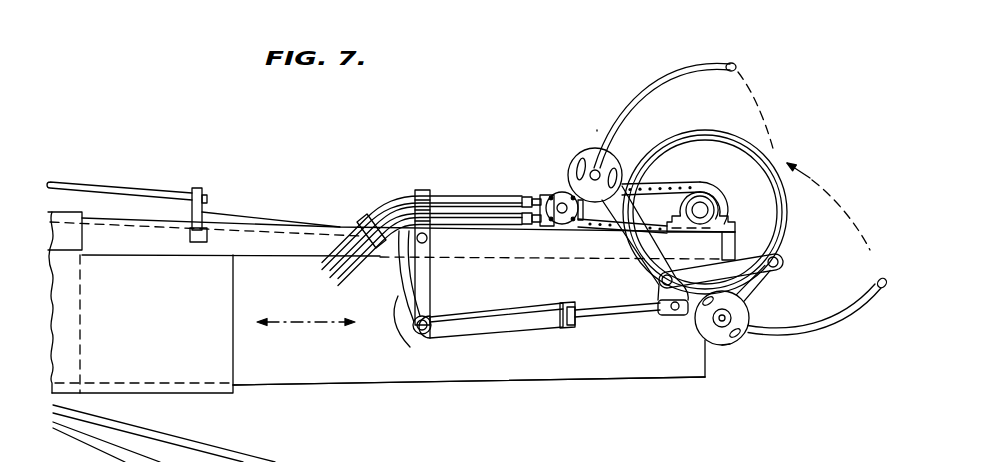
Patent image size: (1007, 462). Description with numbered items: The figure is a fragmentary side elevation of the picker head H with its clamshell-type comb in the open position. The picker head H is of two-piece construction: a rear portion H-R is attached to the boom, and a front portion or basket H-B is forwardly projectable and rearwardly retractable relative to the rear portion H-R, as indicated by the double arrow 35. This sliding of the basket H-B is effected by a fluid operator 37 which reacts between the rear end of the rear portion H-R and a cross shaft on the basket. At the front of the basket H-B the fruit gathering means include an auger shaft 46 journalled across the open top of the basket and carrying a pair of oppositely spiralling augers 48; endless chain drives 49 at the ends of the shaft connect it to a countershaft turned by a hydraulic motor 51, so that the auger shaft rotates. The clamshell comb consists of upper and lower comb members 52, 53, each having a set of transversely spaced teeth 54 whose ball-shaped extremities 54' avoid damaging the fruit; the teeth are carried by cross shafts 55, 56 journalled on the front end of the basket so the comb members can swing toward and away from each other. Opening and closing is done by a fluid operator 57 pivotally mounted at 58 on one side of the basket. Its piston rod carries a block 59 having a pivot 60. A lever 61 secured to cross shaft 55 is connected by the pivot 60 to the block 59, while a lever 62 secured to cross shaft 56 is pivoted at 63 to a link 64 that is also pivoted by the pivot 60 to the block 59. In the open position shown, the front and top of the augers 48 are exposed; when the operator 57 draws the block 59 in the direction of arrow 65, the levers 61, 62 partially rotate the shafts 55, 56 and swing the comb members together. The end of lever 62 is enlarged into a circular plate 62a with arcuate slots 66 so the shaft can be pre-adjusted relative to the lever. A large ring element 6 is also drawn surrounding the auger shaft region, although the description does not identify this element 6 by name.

The rotary ring 6 is at (744, 134).
The projection and retraction indication 35 is at (290, 323).
The fluid operator 37 is at (163, 206).
The auger shaft 46 is at (703, 206).
The augers 48 is at (788, 207).
The endless chain drives 49 is at (685, 185).
The hydraulic motor 51 is at (557, 196).
The upper comb member 52 is at (626, 92).
The lower comb member 53 is at (815, 338).
The teeth 54 is at (753, 183).
The ball-shaped extremities 54' is at (802, 154).
The cross shaft 55 is at (594, 170).
The cross shaft 56 is at (720, 327).
The fluid operator 57 is at (543, 322).
The pivot mounting 58 is at (418, 330).
The block 59 is at (678, 318).
The pivot 60 is at (661, 283).
The lever 61 is at (621, 237).
The lever 62 is at (746, 288).
The circular plate 62a is at (742, 340).
The pivot 63 is at (778, 262).
The link 64 is at (720, 270).
The arrow 65 is at (653, 321).
The arcuate slots 66 is at (749, 320).
The picker head H is at (293, 395).
The rear portion H-R is at (163, 393).
The front portion or basket H-B is at (465, 368).